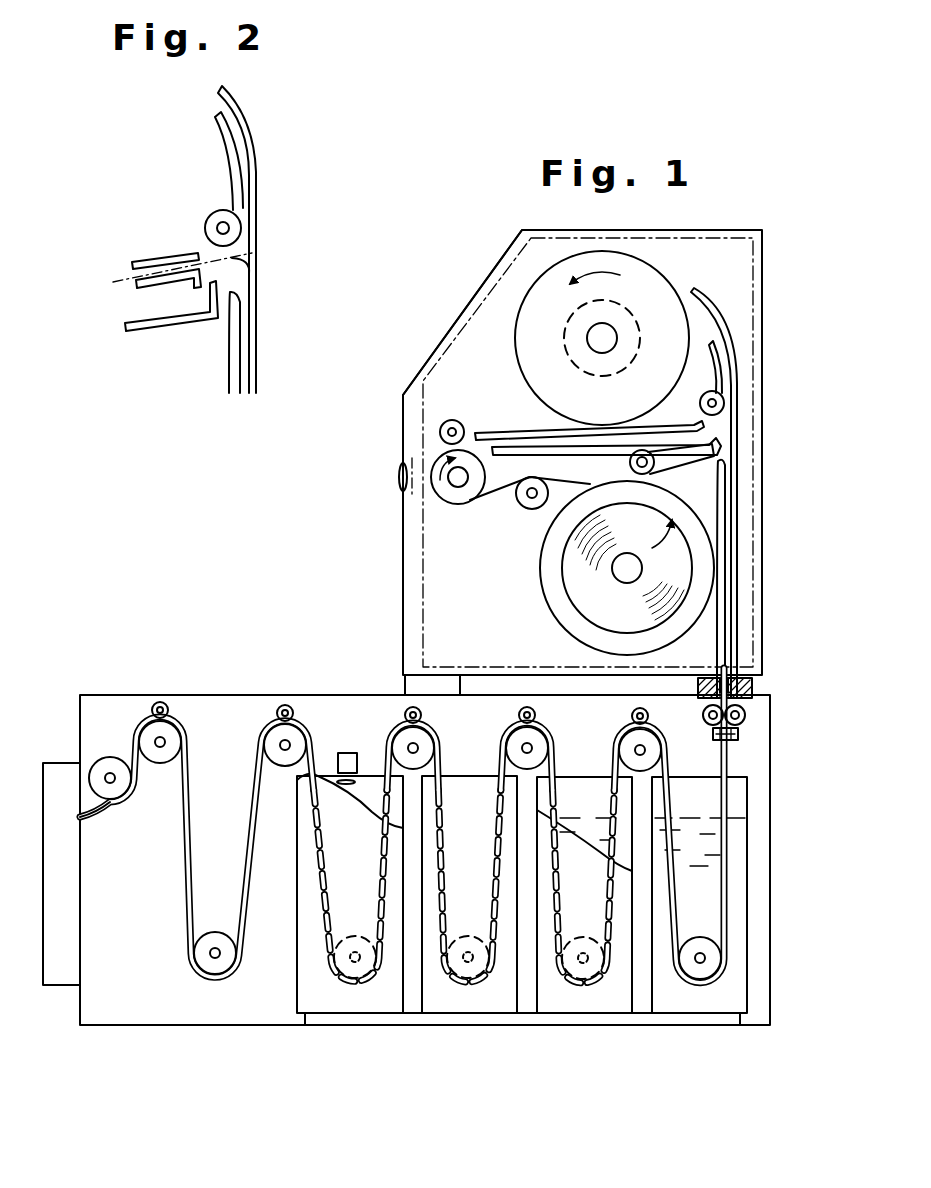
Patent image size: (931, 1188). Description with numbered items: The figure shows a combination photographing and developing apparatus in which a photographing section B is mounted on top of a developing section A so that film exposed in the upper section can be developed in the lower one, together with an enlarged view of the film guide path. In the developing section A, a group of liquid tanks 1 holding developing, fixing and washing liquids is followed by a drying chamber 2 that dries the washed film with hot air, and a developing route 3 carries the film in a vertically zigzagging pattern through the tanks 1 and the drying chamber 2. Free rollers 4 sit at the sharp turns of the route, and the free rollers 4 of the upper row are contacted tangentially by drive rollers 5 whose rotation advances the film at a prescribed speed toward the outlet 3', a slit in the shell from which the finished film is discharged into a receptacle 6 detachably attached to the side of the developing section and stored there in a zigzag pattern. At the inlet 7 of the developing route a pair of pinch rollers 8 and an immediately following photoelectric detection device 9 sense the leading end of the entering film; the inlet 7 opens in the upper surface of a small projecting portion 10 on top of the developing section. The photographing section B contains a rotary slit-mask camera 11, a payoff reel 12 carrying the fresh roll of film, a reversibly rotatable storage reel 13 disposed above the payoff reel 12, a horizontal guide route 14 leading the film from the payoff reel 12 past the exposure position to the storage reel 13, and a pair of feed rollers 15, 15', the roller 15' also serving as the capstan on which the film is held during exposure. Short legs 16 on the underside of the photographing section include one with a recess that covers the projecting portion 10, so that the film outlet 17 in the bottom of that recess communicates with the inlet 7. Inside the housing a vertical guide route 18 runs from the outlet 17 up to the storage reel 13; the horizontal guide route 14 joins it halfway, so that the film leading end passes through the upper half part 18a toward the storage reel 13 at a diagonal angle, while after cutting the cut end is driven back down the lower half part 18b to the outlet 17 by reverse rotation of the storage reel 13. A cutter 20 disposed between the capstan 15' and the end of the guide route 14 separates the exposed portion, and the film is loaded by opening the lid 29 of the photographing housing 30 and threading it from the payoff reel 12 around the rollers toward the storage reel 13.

In FIG. 1, the group of liquid tanks 1 is at (675, 1003).
In FIG. 1, the drying chamber 2 is at (355, 1000).
In FIG. 1, the developing route 3 is at (450, 825).
In FIG. 1, the outlet of the developing route 3' is at (106, 838).
In FIG. 1, the free rollers 4 is at (430, 748).
In FIG. 1, the drive rollers 5 is at (404, 714).
In FIG. 1, the receptacle 6 is at (62, 778).
In FIG. 1, the inlet of the developing route 7 is at (745, 722).
In FIG. 1, the pinch rollers 8 is at (708, 724).
In FIG. 1, the detection device 9 is at (740, 738).
In FIG. 1, the small projecting portion 10 is at (738, 698).
In FIG. 1, the camera 11 is at (395, 480).
In FIG. 1, the payoff reel 12 is at (541, 571).
In FIG. 1, the storage reel 13 is at (545, 292).
In FIG. 2, the horizontal guide route 14 is at (152, 268).
In FIG. 1, the horizontal guide route 14 is at (505, 434).
In FIG. 1, the feed roller 15 is at (460, 407).
In FIG. 1, the feed roller (capstan) 15' is at (510, 494).
In FIG. 1, the short legs 16 is at (752, 688).
In FIG. 1, the film outlet 17 is at (728, 672).
In FIG. 2, the vertical guide route 18 is at (247, 318).
In FIG. 1, the vertical guide route 18 is at (730, 485).
In FIG. 2, the upper half part of the vertical guide route 18a is at (240, 139).
In FIG. 1, the upper half part of the vertical guide route 18a is at (716, 342).
In FIG. 1, the lower half part of the vertical guide route 18b is at (736, 618).
In FIG. 2, the cutter 20 is at (212, 328).
In FIG. 1, the cutter 20 is at (718, 447).
In FIG. 1, the lid 29 is at (470, 316).
In FIG. 1, the photographing housing 30 is at (448, 552).
In FIG. 1, the developing section A is at (240, 670).
In FIG. 1, the photographing section B is at (376, 584).